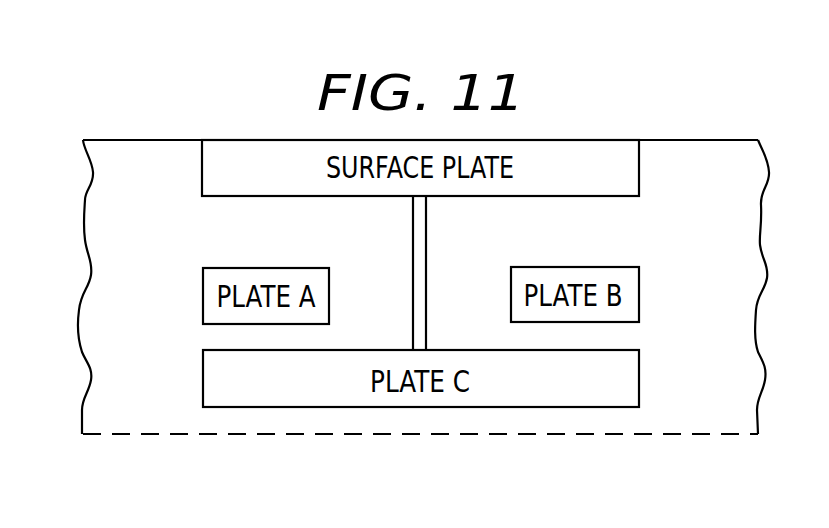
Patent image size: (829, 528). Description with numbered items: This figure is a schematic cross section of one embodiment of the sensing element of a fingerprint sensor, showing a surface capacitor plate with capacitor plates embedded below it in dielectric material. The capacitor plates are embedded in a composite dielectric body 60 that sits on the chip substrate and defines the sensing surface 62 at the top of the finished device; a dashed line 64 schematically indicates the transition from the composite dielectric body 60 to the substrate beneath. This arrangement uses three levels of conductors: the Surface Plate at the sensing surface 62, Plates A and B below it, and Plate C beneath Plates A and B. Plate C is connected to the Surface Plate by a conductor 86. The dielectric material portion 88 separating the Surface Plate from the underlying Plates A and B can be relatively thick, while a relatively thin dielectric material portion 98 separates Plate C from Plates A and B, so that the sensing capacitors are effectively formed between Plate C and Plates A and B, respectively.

The composite dielectric body 60 is at (88, 219).
The sensing surface 62 is at (145, 138).
The dashed line 64 is at (402, 434).
The conductor 86 is at (430, 245).
The dielectric material portion 88 is at (643, 228).
The dielectric material portion or layer 98 is at (645, 337).